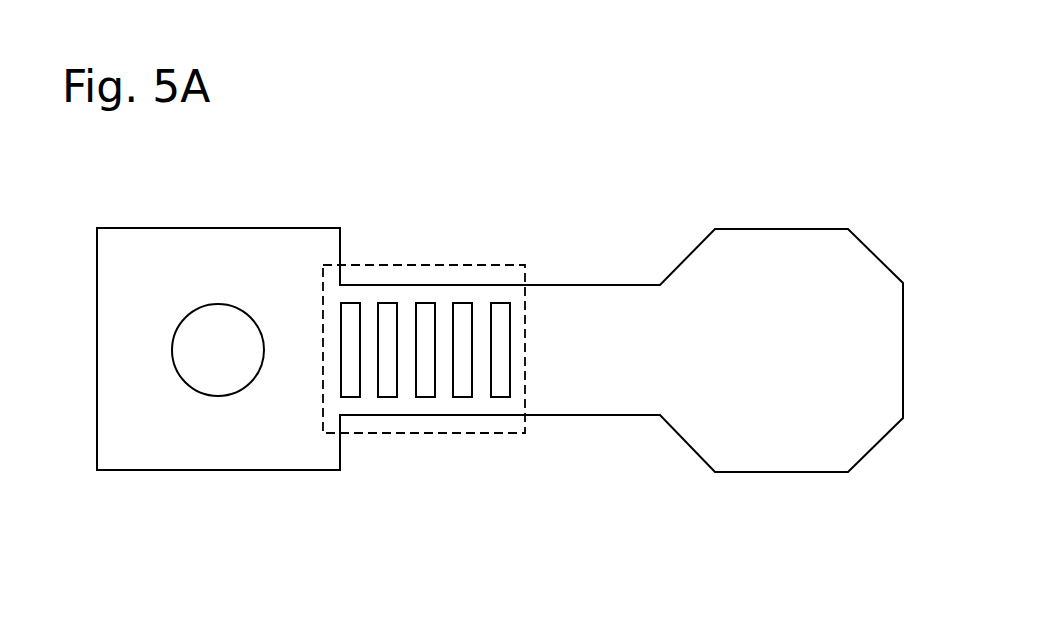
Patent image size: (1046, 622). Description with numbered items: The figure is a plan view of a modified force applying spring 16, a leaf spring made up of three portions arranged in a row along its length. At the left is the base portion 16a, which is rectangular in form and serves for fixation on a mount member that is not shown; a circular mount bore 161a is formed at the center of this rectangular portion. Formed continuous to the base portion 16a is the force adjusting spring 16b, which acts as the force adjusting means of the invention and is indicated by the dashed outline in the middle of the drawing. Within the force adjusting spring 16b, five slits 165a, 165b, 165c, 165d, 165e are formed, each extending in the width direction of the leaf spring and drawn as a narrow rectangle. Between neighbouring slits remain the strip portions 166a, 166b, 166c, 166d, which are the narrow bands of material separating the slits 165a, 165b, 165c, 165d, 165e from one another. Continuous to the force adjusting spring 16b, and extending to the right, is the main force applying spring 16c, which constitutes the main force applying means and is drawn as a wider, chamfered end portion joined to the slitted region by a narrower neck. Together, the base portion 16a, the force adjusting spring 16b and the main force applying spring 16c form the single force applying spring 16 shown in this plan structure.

The force applying spring 16 is at (830, 173).
The base portion 16a is at (197, 242).
The force adjusting spring 16b is at (428, 262).
The main force applying spring 16c is at (770, 225).
The mount bore 161a is at (202, 363).
The slit 165a is at (500, 388).
The slit 165b is at (462, 388).
The slit 165c is at (425, 388).
The slit 165d is at (387, 388).
The slit 165e is at (350, 388).
The strip portion 166a is at (483, 308).
The strip portion 166b is at (445, 308).
The strip portion 166c is at (405, 308).
The strip portion 166d is at (370, 308).